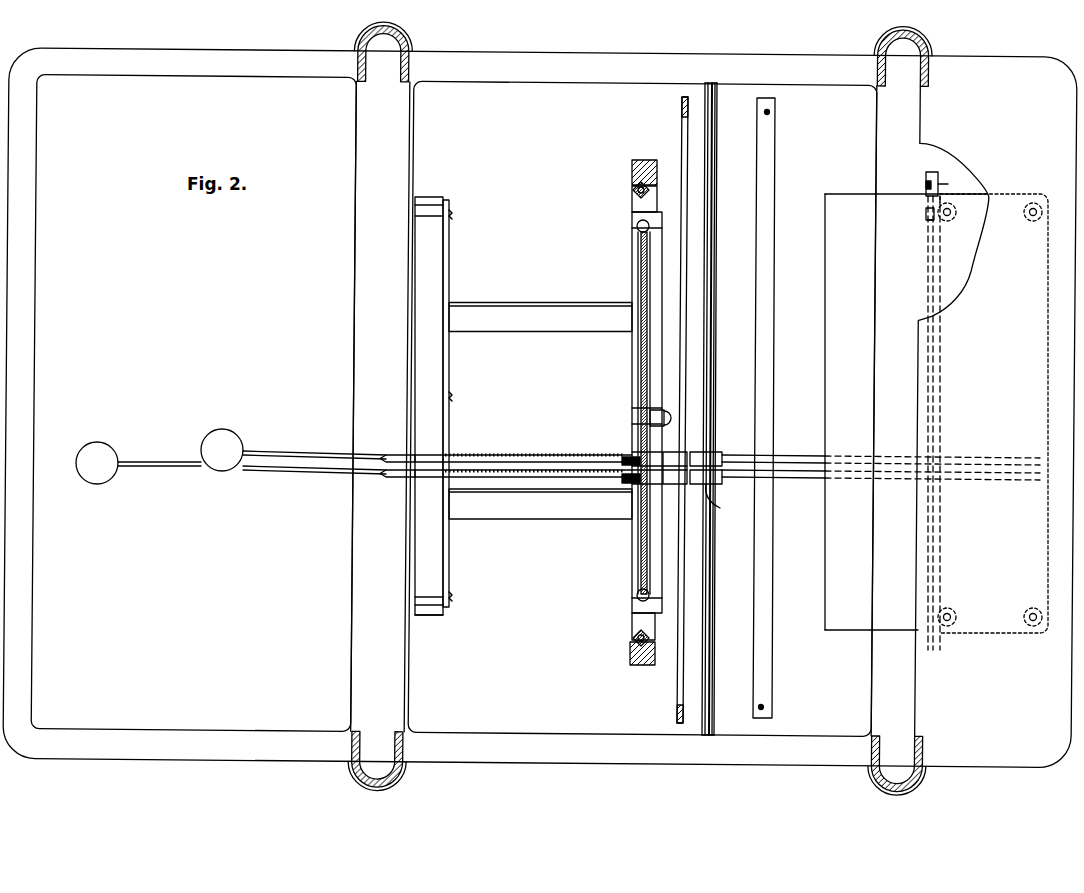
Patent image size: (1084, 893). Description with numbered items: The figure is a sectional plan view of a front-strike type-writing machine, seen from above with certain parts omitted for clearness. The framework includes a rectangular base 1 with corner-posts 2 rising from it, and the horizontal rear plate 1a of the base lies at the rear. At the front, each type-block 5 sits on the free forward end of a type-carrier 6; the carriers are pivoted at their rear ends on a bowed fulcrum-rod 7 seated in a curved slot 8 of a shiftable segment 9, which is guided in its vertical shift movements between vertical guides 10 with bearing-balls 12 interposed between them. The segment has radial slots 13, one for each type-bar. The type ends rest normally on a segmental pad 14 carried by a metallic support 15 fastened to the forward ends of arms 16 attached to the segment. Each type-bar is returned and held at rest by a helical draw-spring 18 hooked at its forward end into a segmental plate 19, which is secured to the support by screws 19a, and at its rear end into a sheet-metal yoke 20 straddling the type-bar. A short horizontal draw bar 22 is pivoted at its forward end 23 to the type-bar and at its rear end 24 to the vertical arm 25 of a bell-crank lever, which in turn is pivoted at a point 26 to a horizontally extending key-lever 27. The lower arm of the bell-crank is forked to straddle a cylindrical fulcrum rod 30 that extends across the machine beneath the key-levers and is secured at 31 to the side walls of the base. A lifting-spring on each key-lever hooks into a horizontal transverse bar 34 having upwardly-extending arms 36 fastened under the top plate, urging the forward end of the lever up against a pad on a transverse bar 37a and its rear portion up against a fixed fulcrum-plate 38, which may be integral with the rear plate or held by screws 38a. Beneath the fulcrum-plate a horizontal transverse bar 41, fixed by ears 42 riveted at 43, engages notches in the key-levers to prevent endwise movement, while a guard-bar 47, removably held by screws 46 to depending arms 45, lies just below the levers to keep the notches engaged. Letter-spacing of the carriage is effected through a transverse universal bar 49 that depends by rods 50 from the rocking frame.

The rectangular base 1 is at (540, 408).
The horizontal rear plate of the base 1a is at (954, 266).
The corner-posts 2 is at (398, 67).
The type-block 5 is at (386, 466).
The type-carrier 6 is at (414, 457).
The fulcrum-rod 7 is at (640, 578).
The curved slot 8 is at (647, 416).
The shiftable segment 9 is at (632, 540).
The vertical guides 10 is at (668, 164).
The bearing-balls 12 is at (633, 190).
The radial slots 13 is at (659, 419).
The segmental pad 14 is at (429, 406).
The metallic support 15 is at (424, 615).
The arms 16 is at (540, 411).
The helical draw-spring 18 is at (524, 456).
The segmental plate 19 is at (443, 556).
The screws 19a is at (452, 216).
The sheet-metal yoke 20 is at (630, 457).
The draw bar 22 is at (672, 484).
The forward end of the link 23 is at (630, 483).
The rear end of the link 24 is at (714, 500).
The vertical arm of the bell-crank lever 25 is at (715, 480).
The pivot point 26 is at (712, 456).
The key-lever 27 is at (300, 455).
The fulcrum rod 30 is at (716, 170).
The securing points of the fulcrum rod 31 is at (716, 84).
The horizontal transverse bar 34 is at (662, 210).
The upwardly-extending arms 36 is at (682, 113).
The transverse bar 37a is at (614, 408).
The fulcrum-plate 38 is at (906, 412).
The screws 38a is at (951, 212).
The horizontal transverse bar 41 is at (928, 284).
The ears 42 is at (926, 214).
The rivets 43 is at (918, 232).
The depending arms 45 is at (932, 172).
The screws 46 is at (926, 183).
The guard-bar 47 is at (954, 183).
The universal bar 49 is at (772, 300).
The rods 50 is at (769, 112).